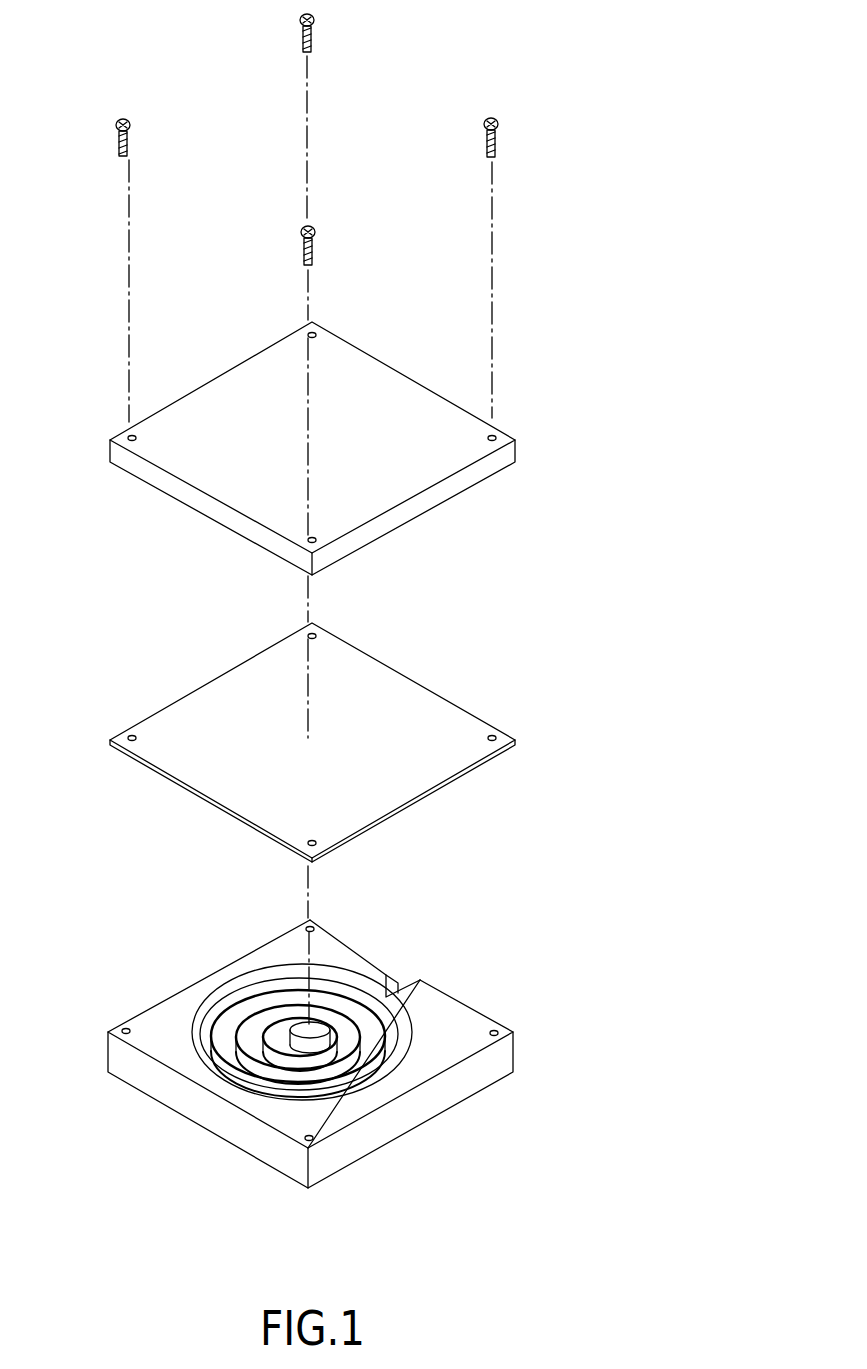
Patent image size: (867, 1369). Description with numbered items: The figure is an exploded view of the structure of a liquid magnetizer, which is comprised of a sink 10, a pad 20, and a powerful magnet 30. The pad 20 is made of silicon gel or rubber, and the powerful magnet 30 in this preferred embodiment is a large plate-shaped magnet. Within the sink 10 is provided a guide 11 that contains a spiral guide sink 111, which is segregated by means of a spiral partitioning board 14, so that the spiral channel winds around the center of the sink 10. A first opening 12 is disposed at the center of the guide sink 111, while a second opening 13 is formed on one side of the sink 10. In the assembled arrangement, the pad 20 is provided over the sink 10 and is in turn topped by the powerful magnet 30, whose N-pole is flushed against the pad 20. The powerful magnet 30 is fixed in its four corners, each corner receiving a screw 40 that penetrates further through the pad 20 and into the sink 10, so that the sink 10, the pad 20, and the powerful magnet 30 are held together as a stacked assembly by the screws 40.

The sink 10 is at (205, 1122).
The guide 11 is at (197, 1023).
The first opening 12 is at (312, 1050).
The second opening 13 is at (400, 983).
The spiral partitioning board 14 is at (280, 987).
The spiral guide sink 111 is at (372, 1043).
The pad 20 is at (448, 712).
The powerful magnet 30 is at (200, 493).
The screw 40 is at (316, 31).